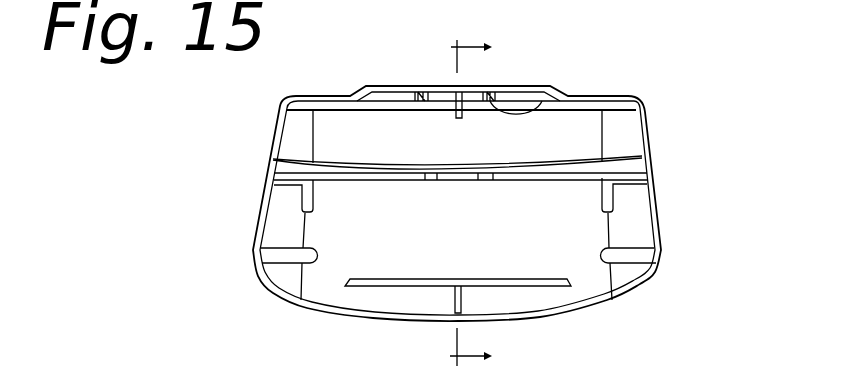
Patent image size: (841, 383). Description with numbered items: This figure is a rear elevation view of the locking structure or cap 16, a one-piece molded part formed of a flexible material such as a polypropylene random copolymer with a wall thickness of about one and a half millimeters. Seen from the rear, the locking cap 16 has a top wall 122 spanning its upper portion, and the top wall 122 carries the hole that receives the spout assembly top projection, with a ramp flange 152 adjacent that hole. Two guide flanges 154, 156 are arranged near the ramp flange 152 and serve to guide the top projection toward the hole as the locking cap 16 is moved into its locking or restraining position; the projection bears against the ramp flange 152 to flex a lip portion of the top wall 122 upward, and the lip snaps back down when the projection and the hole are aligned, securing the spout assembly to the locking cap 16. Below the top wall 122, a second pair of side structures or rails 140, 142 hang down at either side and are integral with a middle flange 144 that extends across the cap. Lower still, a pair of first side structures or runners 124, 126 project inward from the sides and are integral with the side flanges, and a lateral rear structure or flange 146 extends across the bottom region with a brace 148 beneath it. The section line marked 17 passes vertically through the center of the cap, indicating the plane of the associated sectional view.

The locking cap 16 is at (649, 76).
The section line 17- 17 is at (486, 204).
The top wall 122 is at (525, 86).
The runner 124 is at (315, 253).
The runner 126 is at (603, 252).
The rail 140 is at (302, 196).
The rail 142 is at (608, 200).
The middle flange 144 is at (337, 180).
The lateral rear flange 146 is at (480, 278).
The brace 148 is at (465, 295).
The ramp flange 152 is at (462, 114).
The guide flange 154 is at (417, 102).
The guide flange 156 is at (557, 85).